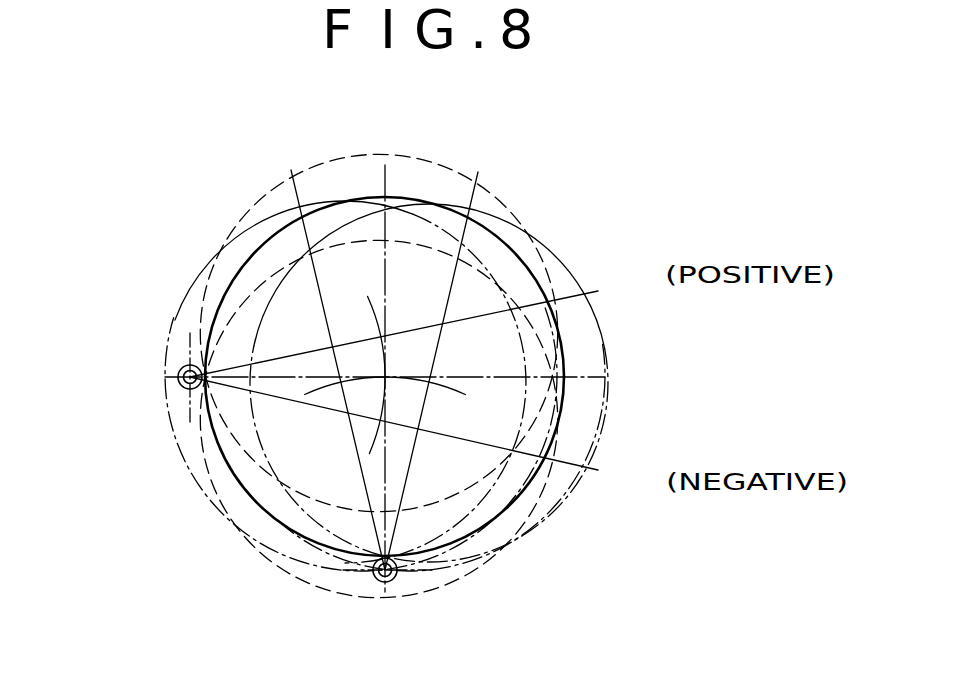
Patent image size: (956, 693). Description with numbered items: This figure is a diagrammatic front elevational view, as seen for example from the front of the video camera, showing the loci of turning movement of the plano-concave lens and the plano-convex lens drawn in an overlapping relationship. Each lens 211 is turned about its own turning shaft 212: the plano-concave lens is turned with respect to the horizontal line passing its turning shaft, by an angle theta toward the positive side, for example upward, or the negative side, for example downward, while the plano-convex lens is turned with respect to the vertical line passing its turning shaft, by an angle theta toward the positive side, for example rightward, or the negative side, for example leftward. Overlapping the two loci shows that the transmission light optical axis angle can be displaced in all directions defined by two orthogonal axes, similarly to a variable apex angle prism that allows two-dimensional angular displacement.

The lens 211 is at (443, 374).
The turning shaft 212 is at (296, 475).